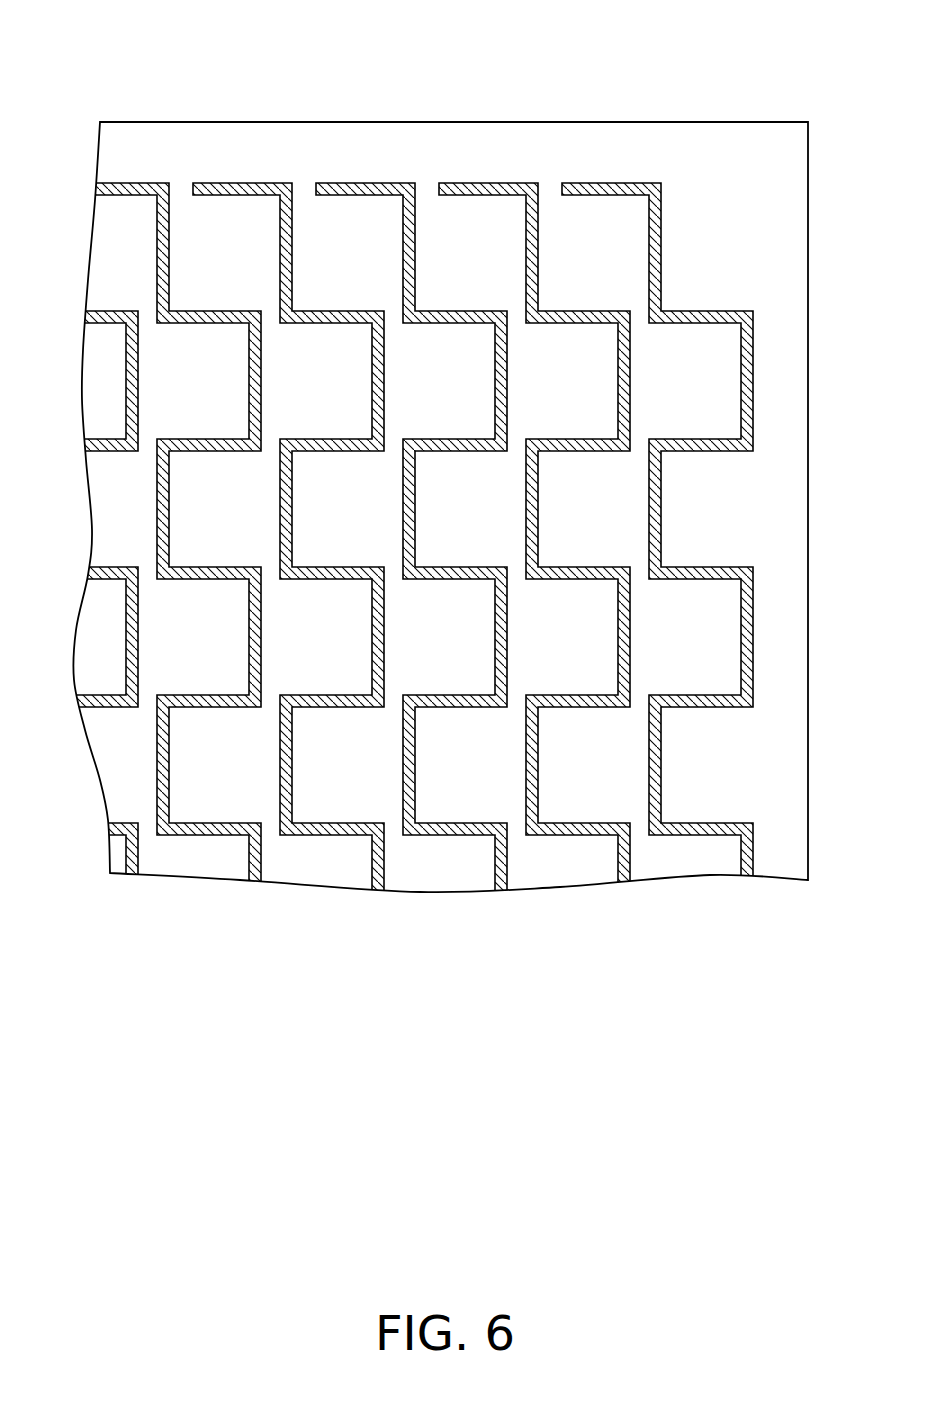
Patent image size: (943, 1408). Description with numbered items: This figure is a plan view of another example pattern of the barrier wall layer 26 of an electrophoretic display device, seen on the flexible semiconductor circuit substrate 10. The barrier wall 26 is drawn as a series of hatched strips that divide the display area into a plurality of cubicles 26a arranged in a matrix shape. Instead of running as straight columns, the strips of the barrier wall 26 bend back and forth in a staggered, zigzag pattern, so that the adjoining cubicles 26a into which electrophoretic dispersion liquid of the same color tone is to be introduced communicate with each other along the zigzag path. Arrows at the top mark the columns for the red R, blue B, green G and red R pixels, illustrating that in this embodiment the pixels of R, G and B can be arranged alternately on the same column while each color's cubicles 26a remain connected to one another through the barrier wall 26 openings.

The semiconductor circuit substrate 10 is at (628, 121).
The barrier wall 26 is at (495, 182).
The cubicle 26a is at (341, 795).
The red R is at (181, 200).
The green G is at (426, 200).
The blue B is at (303, 200).